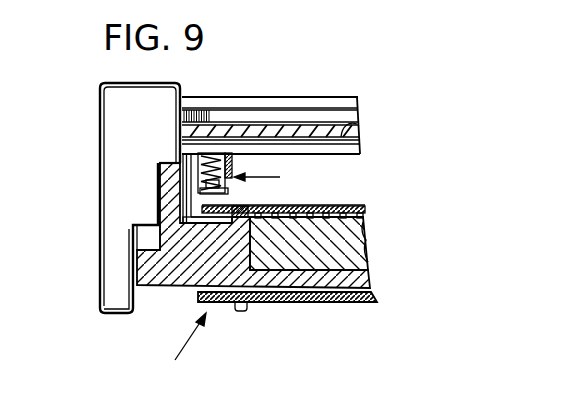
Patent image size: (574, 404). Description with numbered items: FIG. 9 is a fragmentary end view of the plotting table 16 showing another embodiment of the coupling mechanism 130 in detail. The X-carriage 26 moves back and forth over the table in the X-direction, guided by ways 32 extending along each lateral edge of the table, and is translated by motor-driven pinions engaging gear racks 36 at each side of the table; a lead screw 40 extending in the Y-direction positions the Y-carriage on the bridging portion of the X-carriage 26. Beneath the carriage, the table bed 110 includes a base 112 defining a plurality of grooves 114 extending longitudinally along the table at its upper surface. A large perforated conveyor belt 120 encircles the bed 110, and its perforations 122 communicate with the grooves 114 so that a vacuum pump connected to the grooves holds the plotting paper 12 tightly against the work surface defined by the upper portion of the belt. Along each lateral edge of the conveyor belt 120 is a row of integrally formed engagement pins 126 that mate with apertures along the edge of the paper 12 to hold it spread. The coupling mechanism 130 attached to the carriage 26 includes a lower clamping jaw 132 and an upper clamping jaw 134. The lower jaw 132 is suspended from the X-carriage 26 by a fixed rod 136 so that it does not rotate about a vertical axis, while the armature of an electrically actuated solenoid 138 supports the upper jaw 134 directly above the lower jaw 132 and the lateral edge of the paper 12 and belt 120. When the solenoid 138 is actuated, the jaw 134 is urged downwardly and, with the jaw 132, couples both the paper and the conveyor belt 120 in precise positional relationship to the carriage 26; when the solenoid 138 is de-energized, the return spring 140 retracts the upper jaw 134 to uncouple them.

The plotting paper 12 is at (346, 211).
The plotting table 16 is at (185, 348).
The X-carriage 26 is at (301, 103).
The ways 32 is at (166, 192).
The gear racks 36 is at (148, 238).
The lead screw 40 is at (352, 122).
The table bed 110 is at (176, 288).
The base 112 is at (357, 262).
The grooves 114 is at (343, 232).
The conveyor belt 120 is at (318, 300).
The perforations 122 is at (305, 207).
The engagement pins 126 is at (240, 206).
The coupling mechanism 130 is at (273, 181).
The lower clamping jaw 132 is at (204, 220).
The upper clamping jaw 134 is at (232, 198).
The fixed rod 136 is at (193, 150).
The solenoid 138 is at (227, 163).
The return spring 140 is at (218, 152).